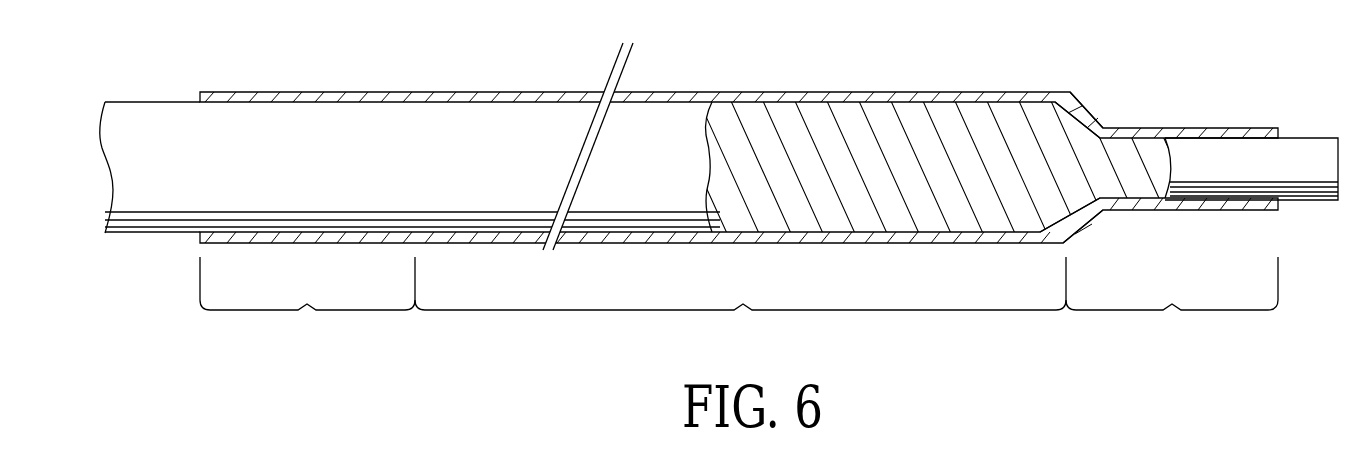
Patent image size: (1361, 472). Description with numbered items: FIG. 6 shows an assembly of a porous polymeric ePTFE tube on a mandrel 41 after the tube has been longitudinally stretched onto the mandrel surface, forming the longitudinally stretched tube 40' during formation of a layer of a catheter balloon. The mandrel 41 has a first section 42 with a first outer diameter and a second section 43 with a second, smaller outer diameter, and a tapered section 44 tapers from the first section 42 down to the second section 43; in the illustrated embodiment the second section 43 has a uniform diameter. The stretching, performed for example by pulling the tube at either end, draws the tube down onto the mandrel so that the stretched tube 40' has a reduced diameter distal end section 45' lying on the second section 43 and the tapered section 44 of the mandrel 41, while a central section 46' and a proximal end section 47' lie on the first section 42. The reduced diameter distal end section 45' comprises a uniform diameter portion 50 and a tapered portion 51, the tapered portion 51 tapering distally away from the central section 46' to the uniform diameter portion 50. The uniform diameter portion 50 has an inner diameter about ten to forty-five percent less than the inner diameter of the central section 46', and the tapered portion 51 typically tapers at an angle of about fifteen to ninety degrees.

The longitudinally stretched tube 40' is at (739, 138).
The mandrel 41 is at (188, 102).
The first section 42 is at (913, 93).
The second section 43 is at (1312, 137).
The tapered section 44 is at (1080, 108).
The reduced diameter distal end section 45' is at (1172, 300).
The central section 46' is at (740, 301).
The proximal end section 47' is at (307, 300).
The uniform diameter portion 50 is at (1194, 202).
The tapered portion 51 is at (1087, 242).